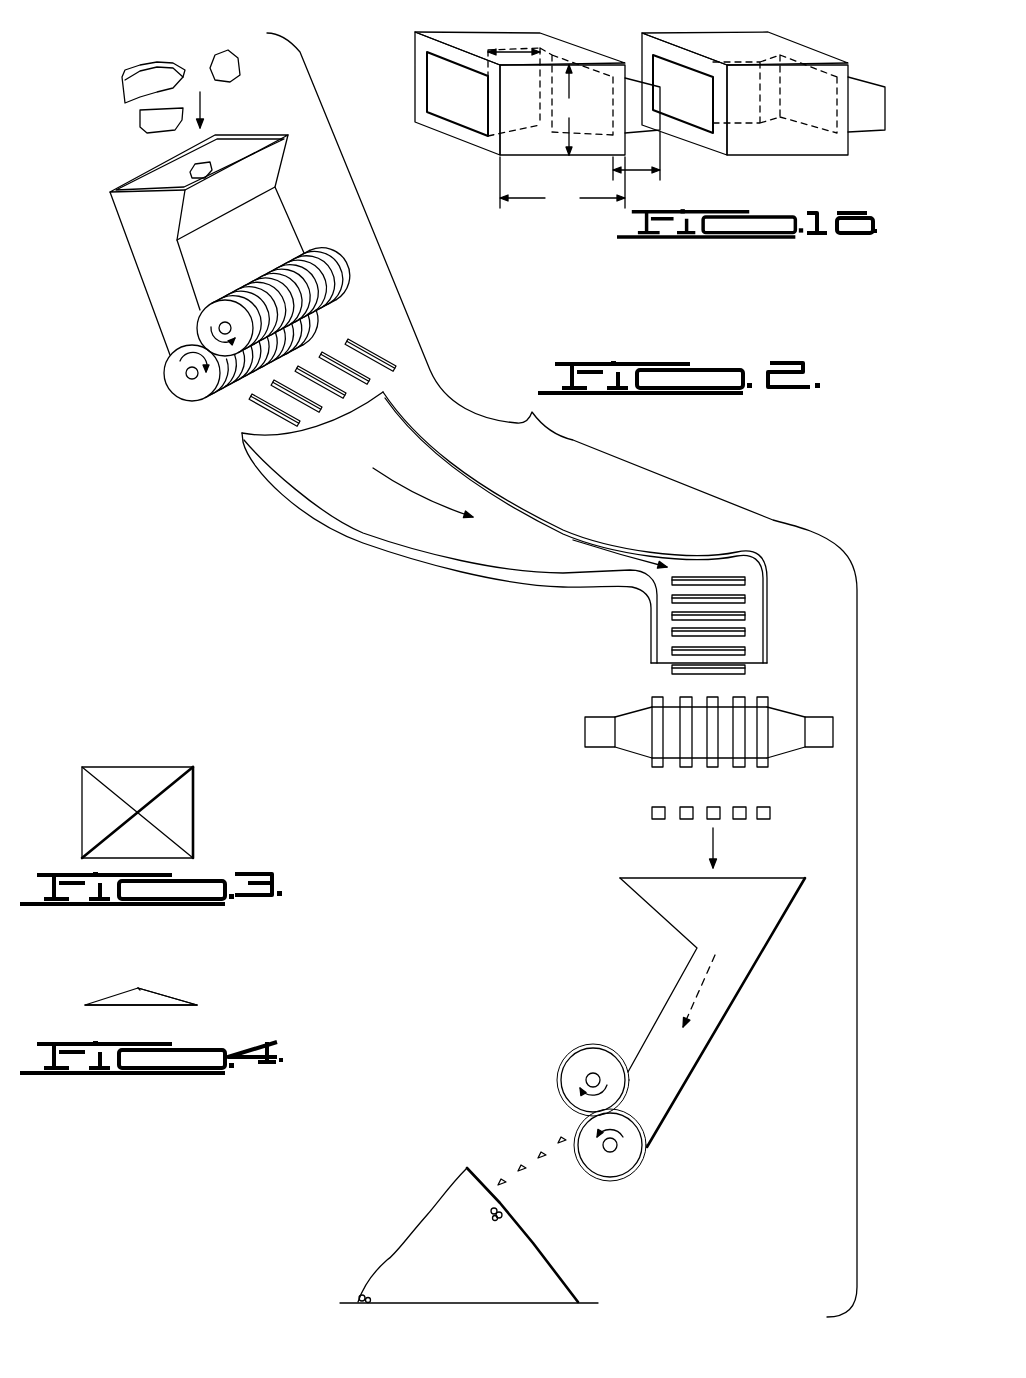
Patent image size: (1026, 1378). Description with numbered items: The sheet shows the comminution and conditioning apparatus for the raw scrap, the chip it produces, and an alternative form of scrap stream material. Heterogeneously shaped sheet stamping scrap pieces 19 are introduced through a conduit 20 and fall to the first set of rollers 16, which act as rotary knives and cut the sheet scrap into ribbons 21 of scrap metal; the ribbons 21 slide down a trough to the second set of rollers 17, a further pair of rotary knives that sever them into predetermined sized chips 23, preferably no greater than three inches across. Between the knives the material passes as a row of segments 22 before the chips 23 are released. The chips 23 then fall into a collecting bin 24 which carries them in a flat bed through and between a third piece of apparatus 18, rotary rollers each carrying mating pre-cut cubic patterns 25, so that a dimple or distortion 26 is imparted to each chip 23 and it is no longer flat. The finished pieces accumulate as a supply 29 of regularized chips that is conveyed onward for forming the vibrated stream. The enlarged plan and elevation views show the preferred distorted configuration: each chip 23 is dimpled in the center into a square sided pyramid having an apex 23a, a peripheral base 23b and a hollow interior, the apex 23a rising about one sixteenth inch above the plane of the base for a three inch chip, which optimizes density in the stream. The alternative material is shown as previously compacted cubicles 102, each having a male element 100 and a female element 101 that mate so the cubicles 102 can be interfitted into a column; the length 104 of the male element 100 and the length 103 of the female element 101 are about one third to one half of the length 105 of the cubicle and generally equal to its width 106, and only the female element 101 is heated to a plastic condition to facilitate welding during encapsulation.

In FIG. 2, the first set of rollers 16 is at (350, 262).
In FIG. 2, the second set of rollers 17 is at (793, 767).
In FIG. 2, the third piece of apparatus 18 is at (640, 1178).
In FIG. 2, the scrap pieces 19 is at (130, 82).
In FIG. 2, the conduit 20 is at (157, 277).
In FIG. 2, the ribbons 21 is at (253, 400).
In FIG. 2, the extruded bar segments 22 is at (767, 703).
In FIG. 2, the chips 23 is at (650, 812).
In FIG. 3, the chips 23 is at (182, 797).
In FIG. 4, the chips 23 is at (158, 1000).
In FIG. 3, the apex 23a is at (138, 812).
In FIG. 4, the apex 23a is at (138, 988).
In FIG. 3, the peripheral base 23b is at (127, 767).
In FIG. 4, the peripheral base 23b is at (106, 1005).
In FIG. 2, the collecting bin 24 is at (704, 1040).
In FIG. 2, the pre-cut cubic patterns 25 is at (573, 1053).
In FIG. 4, the dimple or distortion 26 is at (103, 983).
In FIG. 2, the supply of regularized chips 29 is at (423, 1235).
In FIG. 16, the male element 100 is at (637, 72).
In FIG. 16, the female element 101 is at (446, 85).
In FIG. 16, the compacted cubicles 102 is at (512, 37).
In FIG. 16, the length of the female element 103 is at (522, 50).
In FIG. 16, the length of the male element 104 is at (647, 170).
In FIG. 16, the length of the cubicle 105 is at (562, 182).
In FIG. 16, the width of the cubicle 106 is at (574, 110).